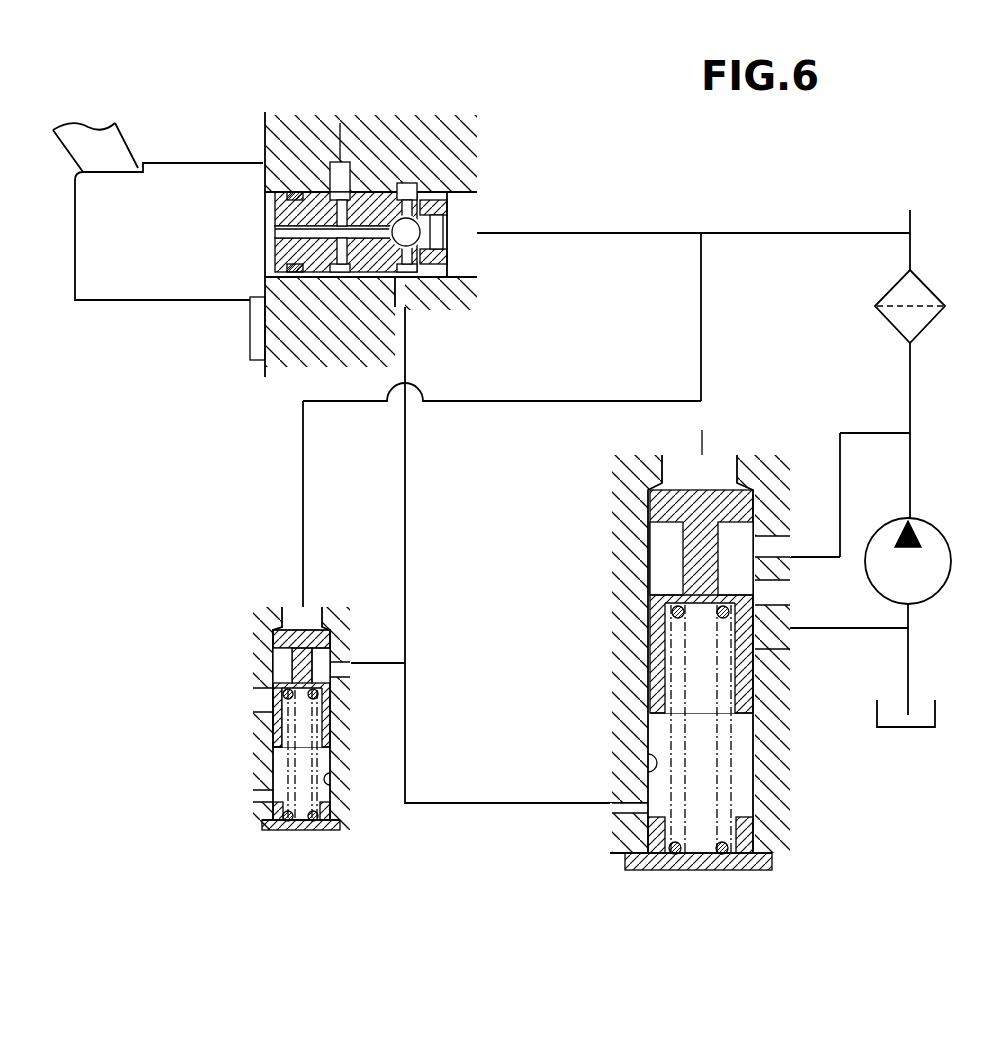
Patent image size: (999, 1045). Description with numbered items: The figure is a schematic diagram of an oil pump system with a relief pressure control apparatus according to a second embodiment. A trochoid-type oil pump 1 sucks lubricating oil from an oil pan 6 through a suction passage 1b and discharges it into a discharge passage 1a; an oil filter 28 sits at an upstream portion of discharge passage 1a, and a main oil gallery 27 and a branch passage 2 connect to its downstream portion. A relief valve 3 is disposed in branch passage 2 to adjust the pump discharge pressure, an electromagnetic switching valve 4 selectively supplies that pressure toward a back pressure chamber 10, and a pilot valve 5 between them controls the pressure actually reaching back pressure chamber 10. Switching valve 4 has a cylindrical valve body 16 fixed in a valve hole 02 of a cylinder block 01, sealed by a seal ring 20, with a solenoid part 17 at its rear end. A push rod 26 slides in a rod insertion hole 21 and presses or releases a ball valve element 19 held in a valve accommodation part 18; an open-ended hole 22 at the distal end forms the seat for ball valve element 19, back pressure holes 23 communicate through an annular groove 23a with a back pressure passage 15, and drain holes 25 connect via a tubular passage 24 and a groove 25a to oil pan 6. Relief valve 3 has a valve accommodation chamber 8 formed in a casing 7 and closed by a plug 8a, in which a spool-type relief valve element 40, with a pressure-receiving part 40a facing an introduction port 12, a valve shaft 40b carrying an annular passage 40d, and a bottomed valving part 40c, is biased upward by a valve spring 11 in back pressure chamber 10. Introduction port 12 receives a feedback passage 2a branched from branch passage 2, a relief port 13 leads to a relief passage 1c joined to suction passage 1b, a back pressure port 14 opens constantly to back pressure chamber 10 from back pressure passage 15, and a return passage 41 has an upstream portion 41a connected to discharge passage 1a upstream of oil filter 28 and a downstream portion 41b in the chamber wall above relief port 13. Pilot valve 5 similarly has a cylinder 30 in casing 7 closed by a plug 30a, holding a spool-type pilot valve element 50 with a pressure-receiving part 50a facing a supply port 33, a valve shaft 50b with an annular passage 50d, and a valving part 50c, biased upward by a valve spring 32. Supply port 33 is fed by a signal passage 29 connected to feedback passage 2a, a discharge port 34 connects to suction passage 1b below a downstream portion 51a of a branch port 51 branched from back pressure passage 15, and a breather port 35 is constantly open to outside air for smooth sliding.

The oil pump 1 is at (952, 560).
The discharge passage 1a is at (912, 404).
The suction passage 1b is at (909, 655).
The relief passage 1c is at (857, 630).
The branch passage 2 is at (803, 233).
The feedback passage 2a is at (706, 300).
The relief valve 3 is at (768, 732).
The electromagnetic switching valve 4 is at (228, 141).
The pilot valve 5 is at (345, 712).
The oil pan 6 is at (921, 728).
The casing 7 is at (768, 782).
The valve accommodation chamber 8 is at (643, 757).
The plug 8a is at (718, 870).
The back pressure chamber 10 is at (745, 807).
The valve spring 11 is at (731, 773).
The introduction port 12 is at (722, 472).
The relief port 13 is at (771, 622).
The back pressure port 14 is at (626, 808).
The back pressure passage 15 is at (406, 508).
The valve body 16 is at (379, 272).
The solenoid part 17 is at (183, 173).
The valve accommodation part 18 is at (440, 225).
The ball valve element 19 is at (444, 285).
The seal ring 20 is at (291, 282).
The rod insertion hole 21 is at (309, 190).
The open-ended hole 22 is at (436, 232).
The back pressure holes 23 is at (408, 275).
The annular groove 23a is at (410, 190).
The tubular passage 24 is at (345, 262).
The drain holes 25 is at (342, 216).
The groove 25a is at (338, 192).
The push rod 26 is at (314, 274).
The main oil gallery 27 is at (914, 228).
The oil filter 28 is at (935, 290).
The signal passage 29 is at (354, 401).
The cylinder 30 is at (332, 789).
The plug 30a is at (292, 830).
The valve spring 32 is at (287, 767).
The supply port 33 is at (311, 617).
The discharge port 34 is at (262, 700).
The breather port 35 is at (260, 797).
The relief valve element 40 is at (636, 667).
The pressure-receiving part 40a is at (697, 497).
The valve shaft 40b is at (694, 562).
The valving part 40c is at (658, 600).
The annular passage 40d is at (662, 542).
The return passage 41 is at (843, 481).
The upstream portion 41a is at (906, 432).
The downstream portion 41b is at (771, 550).
The pilot valve element 50 is at (258, 737).
The pressure-receiving part 50a is at (287, 630).
The valve shaft 50b is at (298, 657).
The valving part 50c is at (280, 713).
The annular passage 50d is at (282, 677).
The branch port 51 is at (382, 660).
The downstream portion 51a is at (343, 660).
The cylinder block 01 is at (279, 124).
The valve hole 02 is at (406, 196).